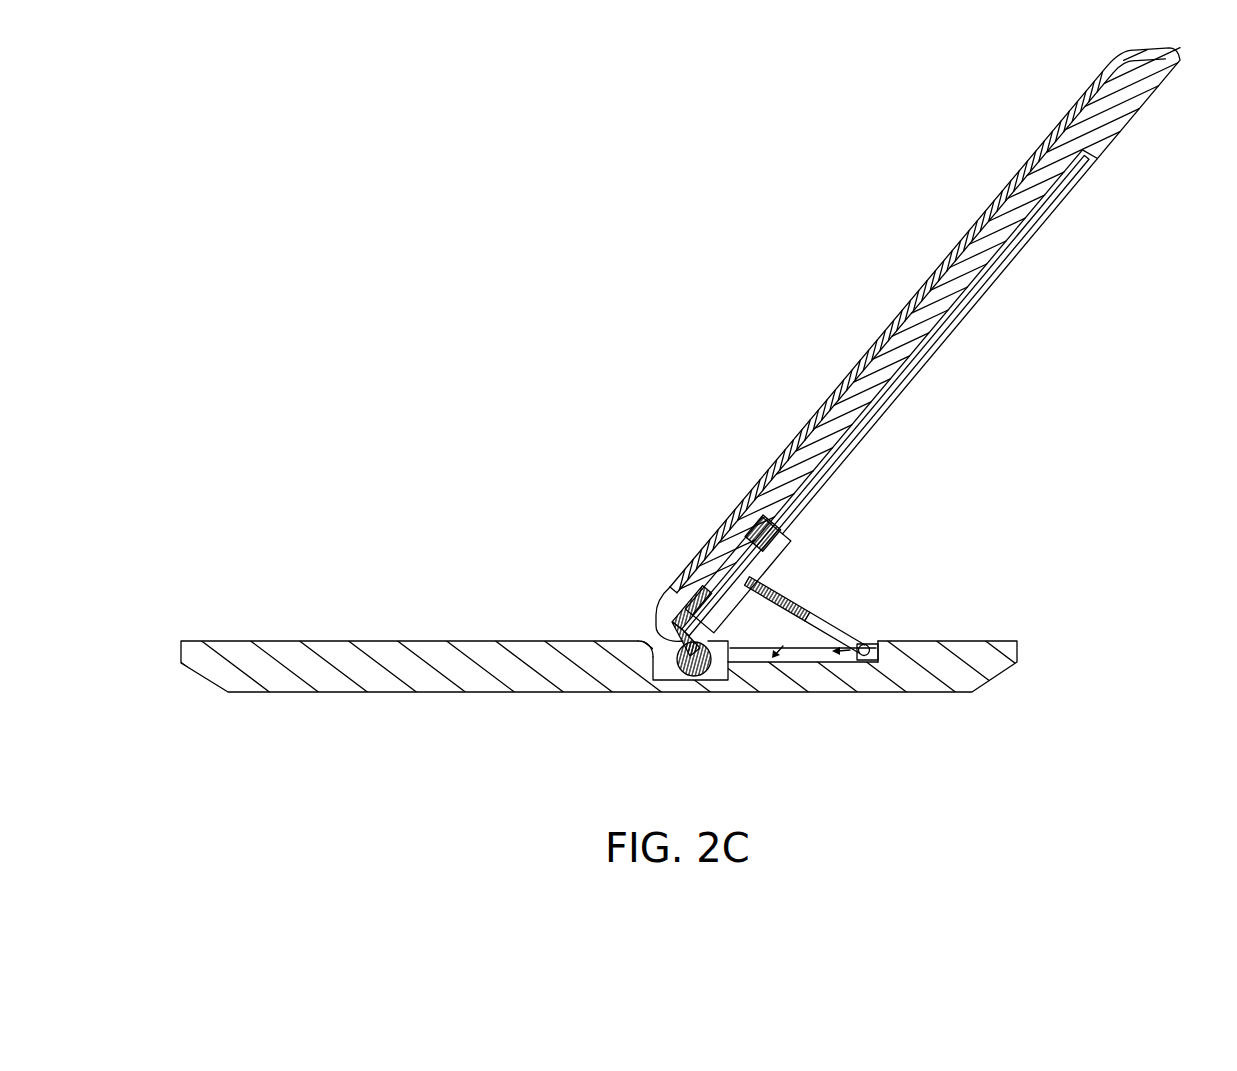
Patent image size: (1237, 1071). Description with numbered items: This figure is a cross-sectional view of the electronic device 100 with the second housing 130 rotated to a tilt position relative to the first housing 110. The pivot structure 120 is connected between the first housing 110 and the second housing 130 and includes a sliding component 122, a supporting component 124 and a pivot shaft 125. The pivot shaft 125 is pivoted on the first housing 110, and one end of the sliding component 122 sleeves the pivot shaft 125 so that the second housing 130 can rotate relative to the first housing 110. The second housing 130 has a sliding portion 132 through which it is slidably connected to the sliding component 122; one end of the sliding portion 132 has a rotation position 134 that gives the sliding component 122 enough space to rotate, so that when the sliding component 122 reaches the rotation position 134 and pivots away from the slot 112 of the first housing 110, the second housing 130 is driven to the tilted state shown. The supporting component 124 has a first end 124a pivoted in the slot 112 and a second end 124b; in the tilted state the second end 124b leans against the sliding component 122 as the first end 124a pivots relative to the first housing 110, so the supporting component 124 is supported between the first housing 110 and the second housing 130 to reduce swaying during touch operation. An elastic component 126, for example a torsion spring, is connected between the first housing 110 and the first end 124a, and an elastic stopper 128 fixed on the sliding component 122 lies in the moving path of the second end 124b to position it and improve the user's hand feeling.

The electronic device 100 is at (1188, 721).
The first housing 110 is at (430, 686).
The slot 112 is at (801, 646).
The pivot structure 120 is at (748, 692).
The sliding component 122 is at (746, 497).
The supporting component 124 is at (822, 614).
The first end 124a is at (880, 649).
The second end 124b is at (776, 560).
The pivot shaft 125 is at (697, 690).
The elastic component 126 is at (893, 647).
The elastic stopper 128 is at (699, 578).
The second housing 130 is at (969, 230).
The sliding portion 132 is at (999, 263).
The rotation position 134 is at (663, 648).